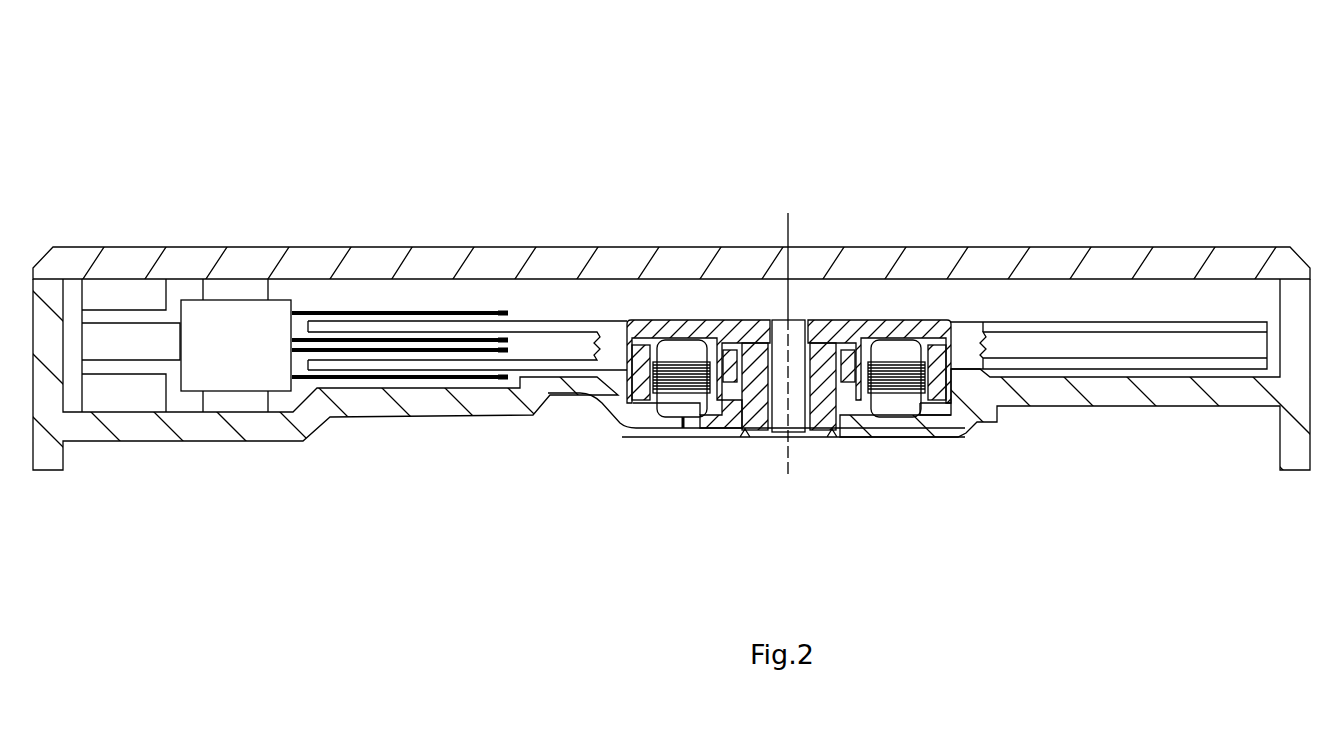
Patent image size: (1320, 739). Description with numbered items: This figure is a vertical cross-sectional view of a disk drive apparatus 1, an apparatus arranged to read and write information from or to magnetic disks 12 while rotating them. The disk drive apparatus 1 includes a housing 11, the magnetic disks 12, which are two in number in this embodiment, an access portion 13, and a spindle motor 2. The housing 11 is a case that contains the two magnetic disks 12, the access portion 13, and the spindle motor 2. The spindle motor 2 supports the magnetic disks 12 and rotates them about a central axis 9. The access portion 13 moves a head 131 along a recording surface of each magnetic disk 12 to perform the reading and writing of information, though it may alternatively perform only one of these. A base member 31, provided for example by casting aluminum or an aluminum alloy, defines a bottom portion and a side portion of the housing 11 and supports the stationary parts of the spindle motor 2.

The disk drive apparatus 1 is at (316, 168).
The spindle motor 2 is at (930, 305).
The central axis 9 is at (787, 225).
The housing 11 is at (1207, 420).
The magnetic disks 12 is at (1157, 363).
The access portion 13 is at (427, 298).
The head 131 is at (513, 460).
The base member 31 is at (1107, 395).